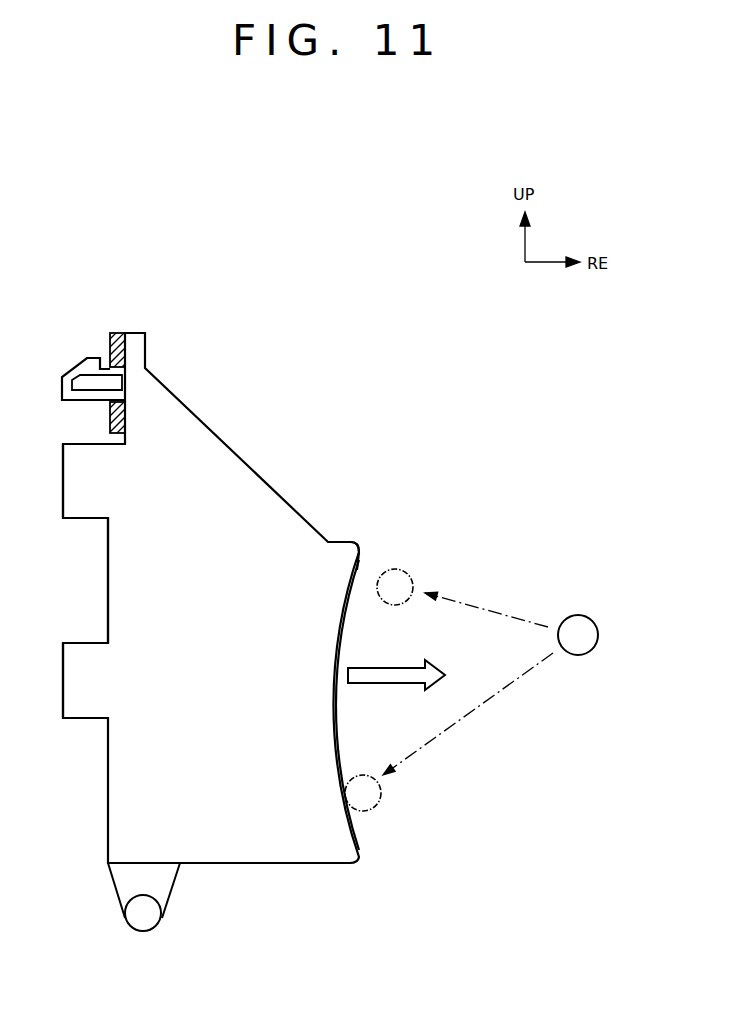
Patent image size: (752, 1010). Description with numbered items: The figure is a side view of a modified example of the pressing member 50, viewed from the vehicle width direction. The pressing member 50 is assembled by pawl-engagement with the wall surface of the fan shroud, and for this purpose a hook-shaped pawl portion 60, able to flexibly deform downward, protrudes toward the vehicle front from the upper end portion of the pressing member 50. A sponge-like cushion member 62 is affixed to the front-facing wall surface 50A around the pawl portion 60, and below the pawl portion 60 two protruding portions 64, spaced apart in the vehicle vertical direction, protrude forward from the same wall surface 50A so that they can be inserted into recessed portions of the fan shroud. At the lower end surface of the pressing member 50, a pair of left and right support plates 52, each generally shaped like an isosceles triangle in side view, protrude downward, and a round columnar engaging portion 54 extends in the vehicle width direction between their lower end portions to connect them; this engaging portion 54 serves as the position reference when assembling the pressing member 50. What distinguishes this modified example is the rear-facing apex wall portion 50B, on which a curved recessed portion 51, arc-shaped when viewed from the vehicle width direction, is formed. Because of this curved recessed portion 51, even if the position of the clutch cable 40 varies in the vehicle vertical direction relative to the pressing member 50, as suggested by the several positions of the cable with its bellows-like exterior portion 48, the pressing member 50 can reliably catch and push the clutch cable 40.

The clutch cable 40 is at (411, 577).
The bellows-like exterior portion 48 is at (497, 708).
The pressing member 50 is at (264, 458).
The wall surface 50A is at (100, 582).
The apex wall portion 50B is at (325, 752).
The curved recessed portion 51 is at (363, 572).
The support plates 52 is at (163, 881).
The engaging portion 54 is at (143, 920).
The pawl portion 60 is at (95, 362).
The cushion member 62 is at (113, 331).
The protruding portions 64 is at (72, 483).